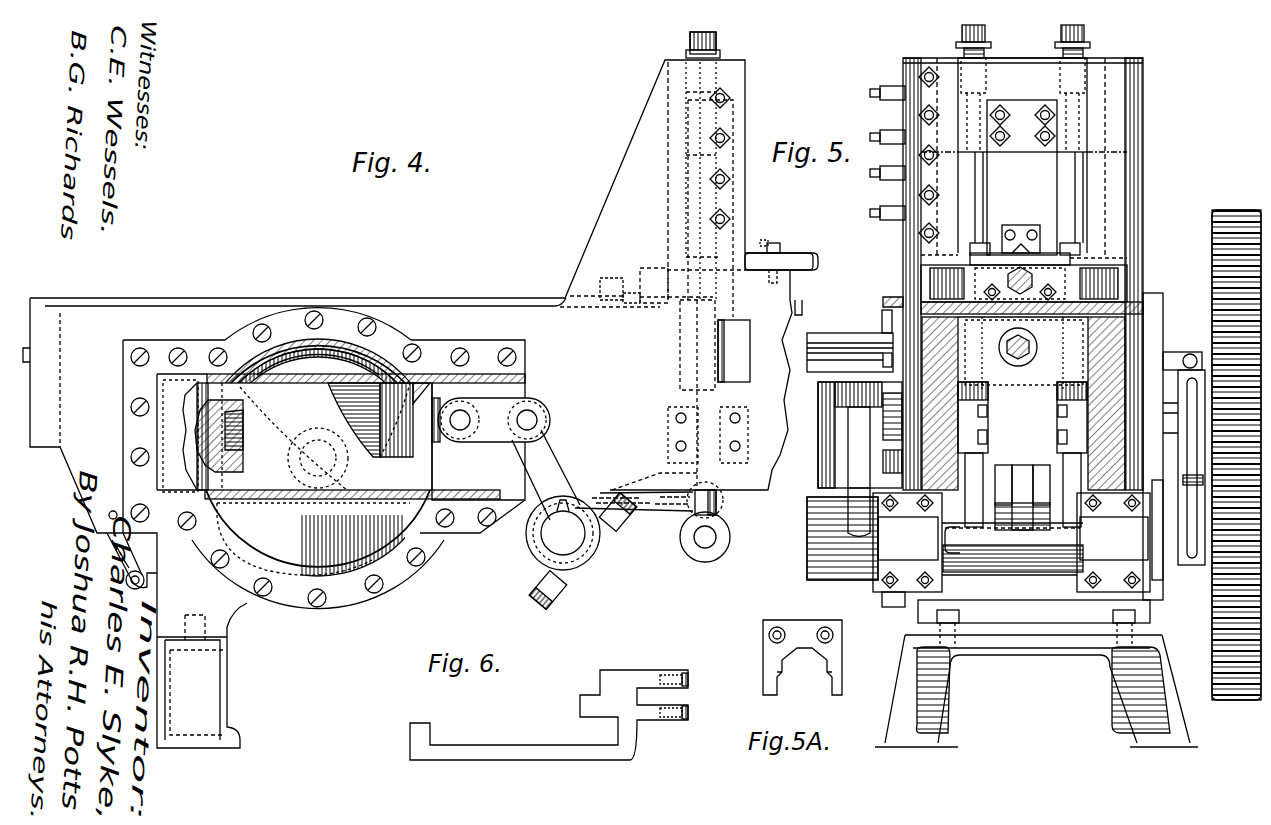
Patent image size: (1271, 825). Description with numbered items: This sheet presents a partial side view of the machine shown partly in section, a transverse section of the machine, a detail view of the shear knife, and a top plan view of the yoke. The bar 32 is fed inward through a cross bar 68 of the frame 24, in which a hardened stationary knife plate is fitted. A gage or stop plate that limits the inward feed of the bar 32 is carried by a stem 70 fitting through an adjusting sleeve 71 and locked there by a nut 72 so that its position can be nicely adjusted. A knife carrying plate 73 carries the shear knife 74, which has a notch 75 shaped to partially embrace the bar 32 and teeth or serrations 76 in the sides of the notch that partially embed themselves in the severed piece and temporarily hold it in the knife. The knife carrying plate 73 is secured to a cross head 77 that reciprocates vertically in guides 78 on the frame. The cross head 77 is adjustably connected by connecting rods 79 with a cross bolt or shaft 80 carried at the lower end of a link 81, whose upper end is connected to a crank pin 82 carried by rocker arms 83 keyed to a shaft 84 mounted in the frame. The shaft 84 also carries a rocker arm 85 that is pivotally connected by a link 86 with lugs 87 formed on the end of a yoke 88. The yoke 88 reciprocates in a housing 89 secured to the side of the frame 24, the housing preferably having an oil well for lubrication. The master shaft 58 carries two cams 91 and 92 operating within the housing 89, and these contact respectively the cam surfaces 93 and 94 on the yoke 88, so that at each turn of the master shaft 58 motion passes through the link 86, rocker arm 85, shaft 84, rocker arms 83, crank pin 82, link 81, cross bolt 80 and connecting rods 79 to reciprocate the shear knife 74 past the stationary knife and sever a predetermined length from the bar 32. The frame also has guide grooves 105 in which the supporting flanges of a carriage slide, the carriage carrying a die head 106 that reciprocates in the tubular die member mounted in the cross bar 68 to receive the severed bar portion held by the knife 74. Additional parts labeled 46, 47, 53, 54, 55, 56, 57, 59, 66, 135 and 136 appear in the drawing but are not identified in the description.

In FIG. 4, the frame 24 is at (495, 298).
In FIG. 5, the frame 24 is at (1108, 366).
In FIG. 5, the bar 32 is at (1008, 281).
In FIG. 5, the bearing 46 is at (1001, 349).
In FIG. 5, the shaft 47 is at (1030, 347).
In FIG. 5, the connecting rod 53 is at (1042, 475).
In FIG. 5, the rod 54 is at (1185, 392).
In FIG. 5, the sleeve 55 is at (1190, 437).
In FIG. 5, the collar 56 is at (1182, 481).
In FIG. 5, the bracket 57 is at (1182, 361).
In FIG. 4, the master shaft 58 is at (322, 440).
In FIG. 5, the gear 59 is at (1228, 210).
In FIG. 4, the cross bar 66 is at (792, 262).
In FIG. 5, the cross bar 66 is at (1075, 260).
In FIG. 5, the cross bar 68 is at (1120, 279).
In FIG. 4, the stem 70 is at (640, 287).
In FIG. 4, the adjusting sleeve 71 is at (668, 250).
In FIG. 5, the adjusting sleeve 71 is at (1075, 203).
In FIG. 4, the nut 72 is at (730, 193).
In FIG. 4, the knife carrying plate 73 is at (732, 223).
In FIG. 5, the knife carrying plate 73 is at (1022, 177).
In FIG. 4, the shear knife 74 is at (748, 248).
In FIG. 5, the shear knife 74 is at (1026, 240).
In FIG. 5A, the shear knife 74 is at (814, 622).
In FIG. 5, the notch 75 is at (1040, 241).
In FIG. 5A, the notch 75 is at (828, 652).
In FIG. 5A, the teeth or serrations 76 is at (792, 682).
In FIG. 5, the cross head 77 is at (1023, 156).
In FIG. 5, the guides 78 is at (903, 64).
In FIG. 4, the connecting rods 79 is at (698, 34).
In FIG. 5, the connecting rods 79 is at (1066, 26).
In FIG. 4, the cross bolt or shaft 80 is at (706, 550).
In FIG. 5, the cross bolt or shaft 80 is at (1079, 540).
In FIG. 4, the link 81 is at (720, 510).
In FIG. 5, the link 81 is at (1020, 522).
In FIG. 4, the crank pin 82 is at (716, 484).
In FIG. 4, the rocker arms 83 is at (655, 522).
In FIG. 4, the shaft 84 is at (571, 548).
In FIG. 5, the shaft 84 is at (883, 538).
In FIG. 4, the rocker arm 85 is at (552, 452).
In FIG. 5, the rocker arm 85 is at (855, 471).
In FIG. 4, the link 86 is at (502, 412).
In FIG. 5, the link 86 is at (858, 405).
In FIG. 4, the lugs 87 is at (470, 405).
In FIG. 5, the lugs 87 is at (893, 460).
In FIG. 6, the lugs 87 is at (688, 712).
In FIG. 4, the yoke 88 is at (436, 470).
In FIG. 5, the yoke 88 is at (860, 450).
In FIG. 6, the yoke 88 is at (572, 760).
In FIG. 5, the housing 89 is at (830, 344).
In FIG. 4, the cam 91 is at (362, 380).
In FIG. 4, the cam 92 is at (243, 298).
In FIG. 4, the cam surface 93 is at (215, 425).
In FIG. 6, the cam surface 93 is at (432, 736).
In FIG. 4, the cam surface 94 is at (420, 471).
In FIG. 6, the cam surface 94 is at (578, 705).
In FIG. 5, the guide grooves 105 is at (905, 303).
In FIG. 5, the die head 106 is at (1036, 356).
In FIG. 4, the bracket 135 is at (150, 562).
In FIG. 4, the pin 136 is at (147, 588).